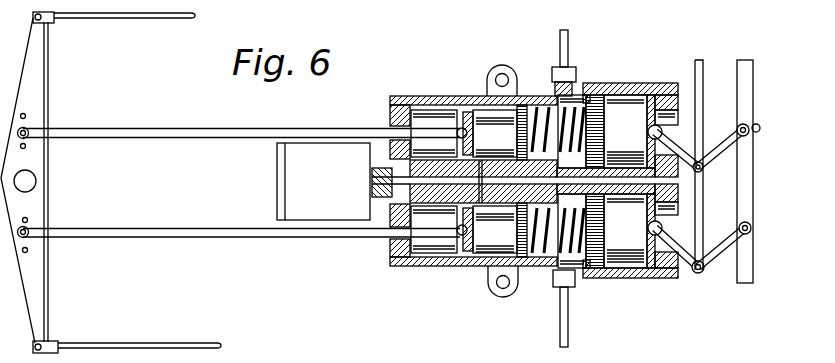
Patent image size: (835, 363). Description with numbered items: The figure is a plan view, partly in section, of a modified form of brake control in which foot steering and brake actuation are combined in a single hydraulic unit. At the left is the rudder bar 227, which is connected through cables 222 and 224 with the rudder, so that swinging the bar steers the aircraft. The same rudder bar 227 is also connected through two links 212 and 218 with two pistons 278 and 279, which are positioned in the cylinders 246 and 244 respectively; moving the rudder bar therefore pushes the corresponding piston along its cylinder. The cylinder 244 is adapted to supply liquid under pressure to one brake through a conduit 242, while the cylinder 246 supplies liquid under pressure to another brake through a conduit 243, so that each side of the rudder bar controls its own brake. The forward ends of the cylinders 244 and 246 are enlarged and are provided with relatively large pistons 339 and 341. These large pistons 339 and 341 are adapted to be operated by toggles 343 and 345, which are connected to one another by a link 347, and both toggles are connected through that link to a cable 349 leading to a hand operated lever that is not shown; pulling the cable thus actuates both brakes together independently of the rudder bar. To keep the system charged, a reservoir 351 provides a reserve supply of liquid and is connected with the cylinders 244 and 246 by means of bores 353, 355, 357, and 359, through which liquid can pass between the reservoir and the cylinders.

The link 212 is at (172, 232).
The link 218 is at (144, 134).
The cable 222 is at (148, 16).
The cable 224 is at (150, 344).
The rudder bar 227 is at (37, 88).
The conduit 242 is at (568, 50).
The conduit 243 is at (569, 333).
The cylinder 244 is at (536, 95).
The cylinder 246 is at (538, 263).
The piston 278 is at (485, 232).
The piston 279 is at (490, 127).
The piston 339 is at (628, 248).
The piston 341 is at (647, 84).
The toggle 343 is at (713, 258).
The toggle 345 is at (703, 172).
The link 347 is at (703, 219).
The cable 349 is at (700, 58).
The reservoir 351 is at (277, 171).
The bore 353 is at (391, 203).
The bore 355 is at (481, 212).
The bore 357 is at (580, 96).
The bore 359 is at (612, 175).